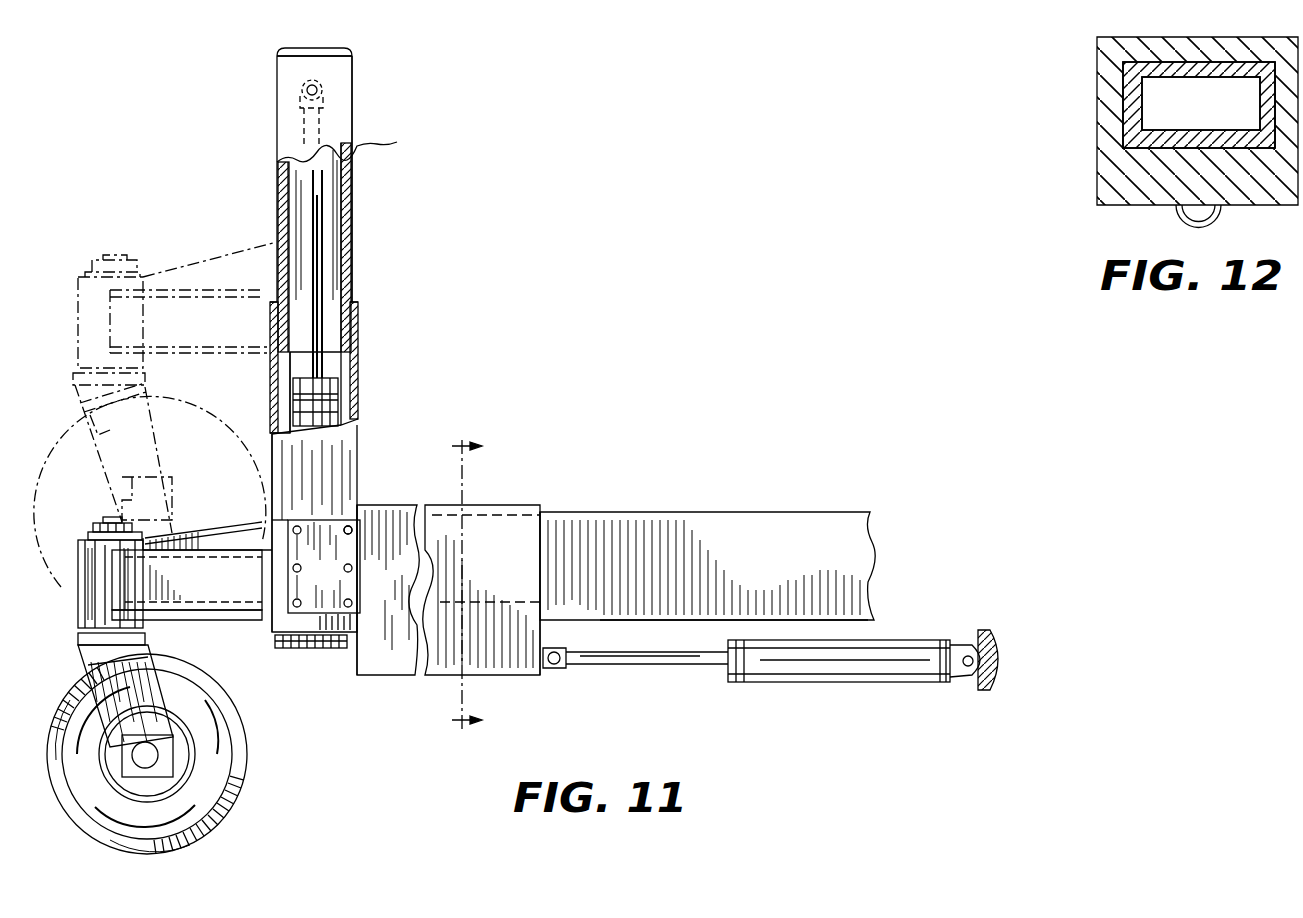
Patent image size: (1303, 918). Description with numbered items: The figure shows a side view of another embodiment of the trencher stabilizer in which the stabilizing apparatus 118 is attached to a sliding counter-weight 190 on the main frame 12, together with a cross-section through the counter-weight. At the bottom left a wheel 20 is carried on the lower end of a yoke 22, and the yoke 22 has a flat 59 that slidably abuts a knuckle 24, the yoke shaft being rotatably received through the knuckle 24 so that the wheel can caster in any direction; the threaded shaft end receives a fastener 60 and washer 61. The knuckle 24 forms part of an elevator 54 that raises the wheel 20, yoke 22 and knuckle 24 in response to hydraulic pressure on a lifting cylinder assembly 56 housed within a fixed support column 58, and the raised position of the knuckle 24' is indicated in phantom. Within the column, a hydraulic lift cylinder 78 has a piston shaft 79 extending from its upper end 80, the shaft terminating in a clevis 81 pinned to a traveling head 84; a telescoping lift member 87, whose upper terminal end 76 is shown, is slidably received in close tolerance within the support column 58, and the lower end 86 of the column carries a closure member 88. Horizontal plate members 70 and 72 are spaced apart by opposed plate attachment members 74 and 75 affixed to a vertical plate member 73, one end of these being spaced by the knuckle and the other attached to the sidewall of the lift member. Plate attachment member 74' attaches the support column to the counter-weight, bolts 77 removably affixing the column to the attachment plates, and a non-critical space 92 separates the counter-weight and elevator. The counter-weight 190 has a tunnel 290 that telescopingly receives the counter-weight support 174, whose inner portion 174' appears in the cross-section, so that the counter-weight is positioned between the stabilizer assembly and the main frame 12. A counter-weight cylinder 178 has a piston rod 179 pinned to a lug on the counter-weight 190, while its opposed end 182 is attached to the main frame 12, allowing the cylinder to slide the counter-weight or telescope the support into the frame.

In FIG. 11, the wheel 20 is at (238, 754).
In FIG. 11, the yoke 22 is at (172, 698).
In FIG. 11, the knuckle 24 is at (87, 584).
In FIG. 11, the knuckle 24' is at (154, 305).
In FIG. 11, the elevator 54 is at (345, 550).
In FIG. 11, the lifting cylinder assembly 56 is at (331, 372).
In FIG. 11, the fixed support column 58 is at (360, 330).
In FIG. 11, the flat 59 is at (70, 638).
In FIG. 11, the fastener 60 is at (104, 520).
In FIG. 11, the washer 61 is at (92, 532).
In FIG. 11, the horizontal plate member 70 is at (194, 620).
In FIG. 11, the horizontal plate member 72 is at (208, 540).
In FIG. 11, the vertical plate member 73 is at (214, 520).
In FIG. 11, the plate attachment member 74 is at (324, 566).
In FIG. 11, the plate attachment member 74' is at (255, 501).
In FIG. 11, the plate attachment member 75 is at (244, 589).
In FIG. 11, the upper terminal end of telescoping lifting member 76 is at (342, 54).
In FIG. 11, the bolts 77 is at (351, 570).
In FIG. 11, the hydraulic lift cylinder 78 is at (288, 424).
In FIG. 11, the piston shaft 79 is at (320, 222).
In FIG. 11, the upper end of lift cylinder 80 is at (292, 392).
In FIG. 11, the clevis 81 is at (292, 92).
In FIG. 11, the traveling head 84 is at (352, 91).
In FIG. 11, the lower end of fixed support column 86 is at (357, 618).
In FIG. 11, the telescoping lift member 87 is at (352, 275).
In FIG. 11, the closure member 88 is at (275, 642).
In FIG. 11, the space 92 is at (350, 532).
In FIG. 11, the stabilizing apparatus 118 is at (66, 380).
In FIG. 11, the main frame 12 is at (865, 484).
In FIG. 11, the counter-weight support 174 is at (707, 550).
In FIG. 12, the counter-weight support 174 is at (1199, 76).
In FIG. 12, the counter-weight support 174' is at (1201, 103).
In FIG. 11, the counter-weight cylinder 178 is at (792, 680).
In FIG. 12, the counter-weight cylinder 178 is at (1212, 215).
In FIG. 11, the piston rod 179 is at (636, 665).
In FIG. 11, the opposed end of cylinder 182 is at (968, 680).
In FIG. 11, the counter-weight 190 is at (498, 586).
In FIG. 12, the counter-weight 190 is at (1094, 60).
In FIG. 11, the tunnel 290 is at (844, 448).
In FIG. 12, the tunnel 290 is at (1128, 104).